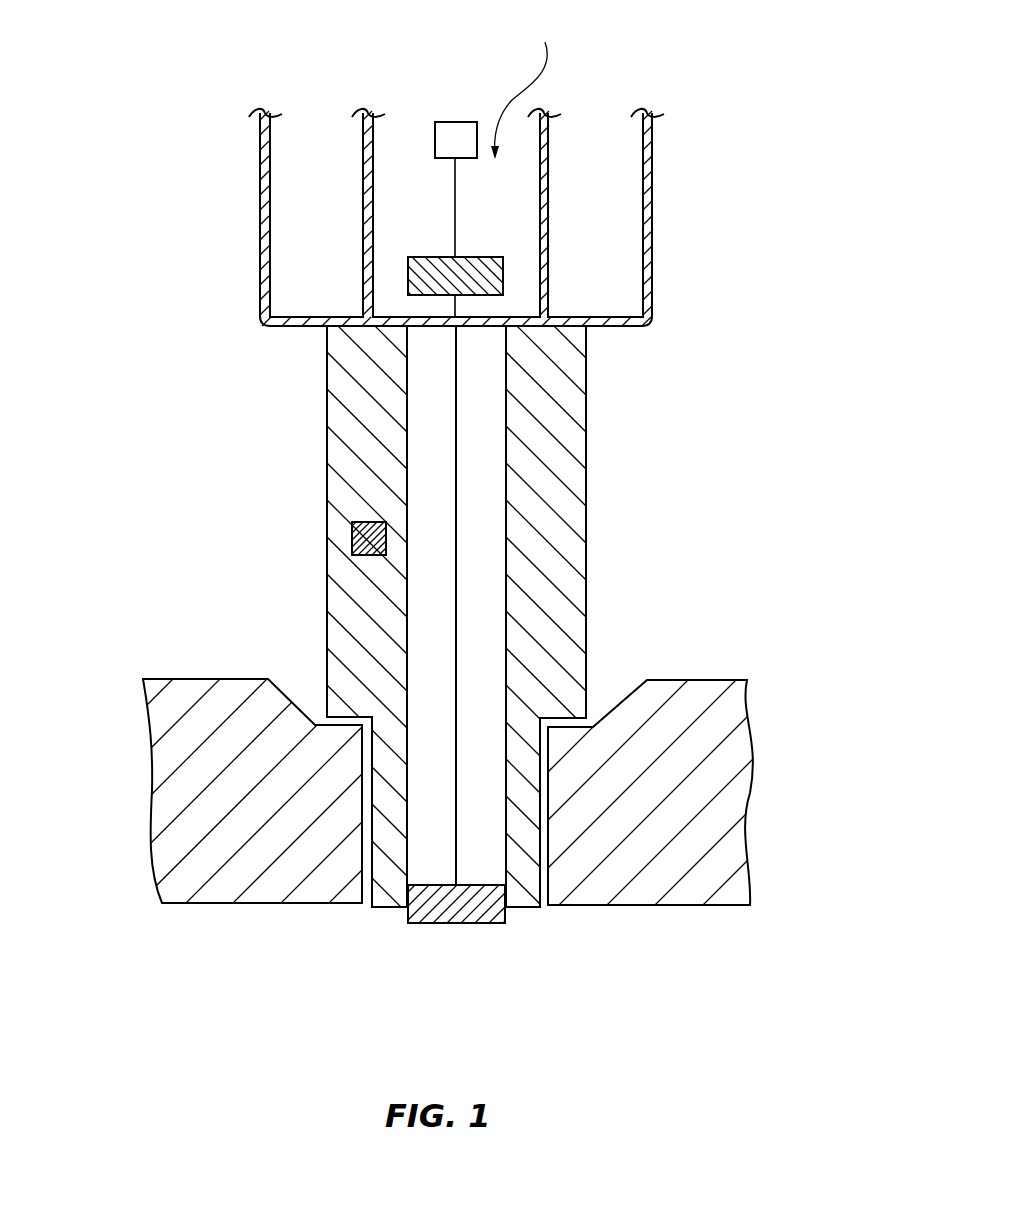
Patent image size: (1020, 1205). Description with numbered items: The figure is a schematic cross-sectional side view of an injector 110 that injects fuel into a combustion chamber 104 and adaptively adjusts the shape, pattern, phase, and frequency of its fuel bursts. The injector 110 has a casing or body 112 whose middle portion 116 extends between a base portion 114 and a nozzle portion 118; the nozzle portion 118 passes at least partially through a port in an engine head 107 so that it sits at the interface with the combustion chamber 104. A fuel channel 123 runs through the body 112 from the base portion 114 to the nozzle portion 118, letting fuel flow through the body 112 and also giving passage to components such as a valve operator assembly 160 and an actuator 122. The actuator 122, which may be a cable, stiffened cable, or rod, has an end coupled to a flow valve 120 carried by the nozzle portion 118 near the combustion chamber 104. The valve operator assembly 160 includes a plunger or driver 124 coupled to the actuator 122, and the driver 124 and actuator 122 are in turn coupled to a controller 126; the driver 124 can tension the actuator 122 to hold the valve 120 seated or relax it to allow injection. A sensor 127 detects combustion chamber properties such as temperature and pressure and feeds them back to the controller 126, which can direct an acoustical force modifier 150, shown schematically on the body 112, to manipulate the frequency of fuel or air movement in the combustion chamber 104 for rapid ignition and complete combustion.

The combustion chamber 104 is at (180, 1031).
The engine head 107 is at (708, 688).
The injector 110 is at (150, 168).
The body 112 is at (338, 448).
The base portion 114 is at (652, 175).
The middle portion 116 is at (580, 513).
The nozzle portion 118 is at (537, 868).
The flow valve 120 is at (468, 923).
The actuator 122 is at (456, 442).
The fuel channel 123 is at (507, 597).
The driver 124 is at (425, 256).
The controller 126 is at (452, 121).
The sensor 127 is at (422, 923).
The acoustical force modifier 150 is at (352, 537).
The valve operator assembly 160 is at (527, 88).